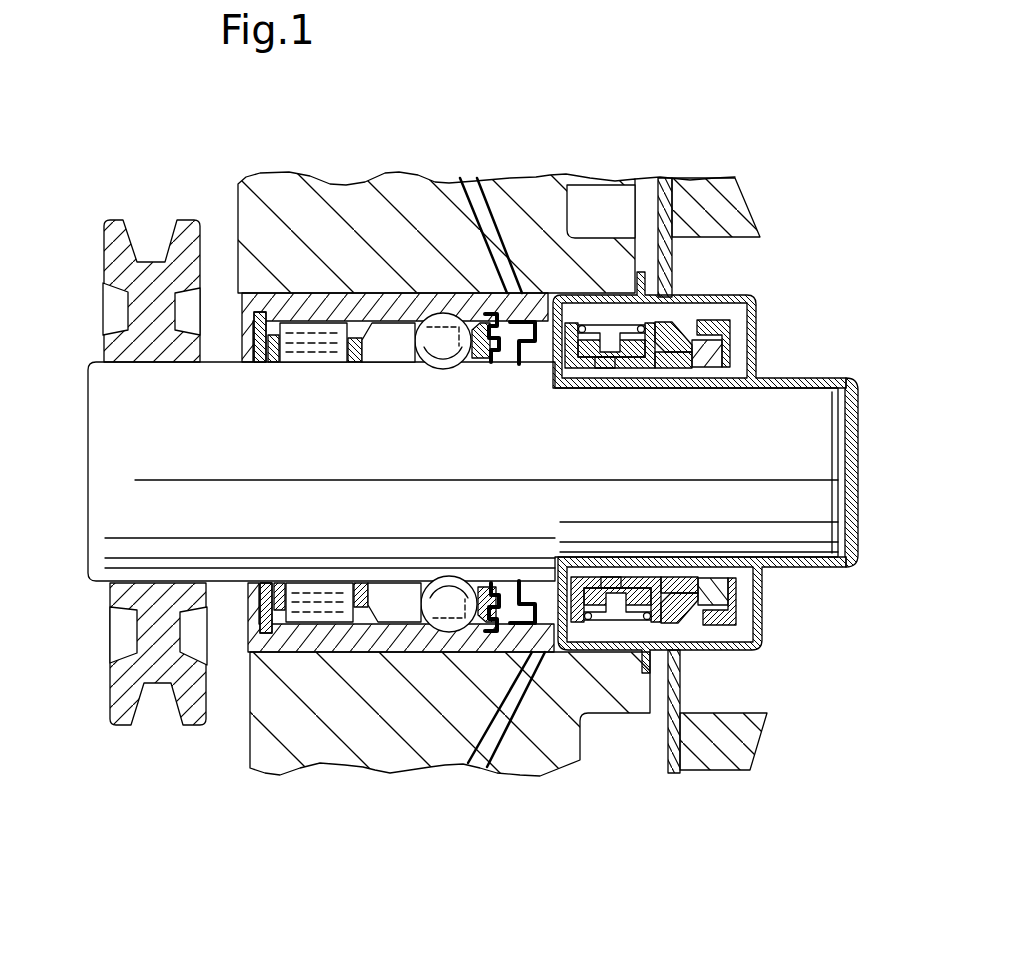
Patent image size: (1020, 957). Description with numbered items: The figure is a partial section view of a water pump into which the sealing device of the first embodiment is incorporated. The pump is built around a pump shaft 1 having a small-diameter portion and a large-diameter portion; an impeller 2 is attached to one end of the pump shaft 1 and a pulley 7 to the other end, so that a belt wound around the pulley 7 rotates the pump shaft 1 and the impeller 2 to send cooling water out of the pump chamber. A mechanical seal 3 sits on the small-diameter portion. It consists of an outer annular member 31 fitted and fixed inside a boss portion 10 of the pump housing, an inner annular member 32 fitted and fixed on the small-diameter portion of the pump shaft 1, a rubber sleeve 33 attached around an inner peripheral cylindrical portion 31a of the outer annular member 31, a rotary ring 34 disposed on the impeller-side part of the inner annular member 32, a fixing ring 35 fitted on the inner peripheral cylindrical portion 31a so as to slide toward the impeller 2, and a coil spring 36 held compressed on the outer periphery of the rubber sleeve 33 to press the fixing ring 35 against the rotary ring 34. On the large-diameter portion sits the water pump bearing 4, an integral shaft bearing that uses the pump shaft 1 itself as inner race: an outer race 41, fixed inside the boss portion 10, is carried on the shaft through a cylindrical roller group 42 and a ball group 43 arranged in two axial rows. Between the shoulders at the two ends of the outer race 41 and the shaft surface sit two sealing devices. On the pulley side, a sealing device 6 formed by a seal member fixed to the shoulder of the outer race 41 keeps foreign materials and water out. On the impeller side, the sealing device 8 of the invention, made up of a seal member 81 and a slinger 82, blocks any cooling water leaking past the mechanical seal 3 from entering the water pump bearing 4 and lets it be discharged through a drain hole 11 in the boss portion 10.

The pump shaft 1 is at (135, 462).
The impeller 2 is at (728, 208).
The mechanical seal 3 is at (677, 312).
The water pump bearing 4 is at (393, 378).
The sealing device 6 is at (250, 333).
The pulley 7 is at (122, 256).
The sealing device 8 is at (503, 344).
The boss portion 10 is at (373, 735).
The drain hole 11 is at (517, 762).
The outer annular member 31 is at (579, 360).
The inner peripheral cylindrical portion 31a is at (603, 368).
The inner annular member 32 is at (696, 390).
The rubber sleeve 33 is at (557, 382).
The rotary ring 34 is at (728, 343).
The fixing ring 35 is at (667, 368).
The coil spring 36 is at (642, 318).
The outer race 41 is at (310, 307).
The cylindrical roller group 42 is at (300, 364).
The ball group 43 is at (396, 364).
The seal member 81 is at (497, 316).
The slinger 82 is at (521, 318).